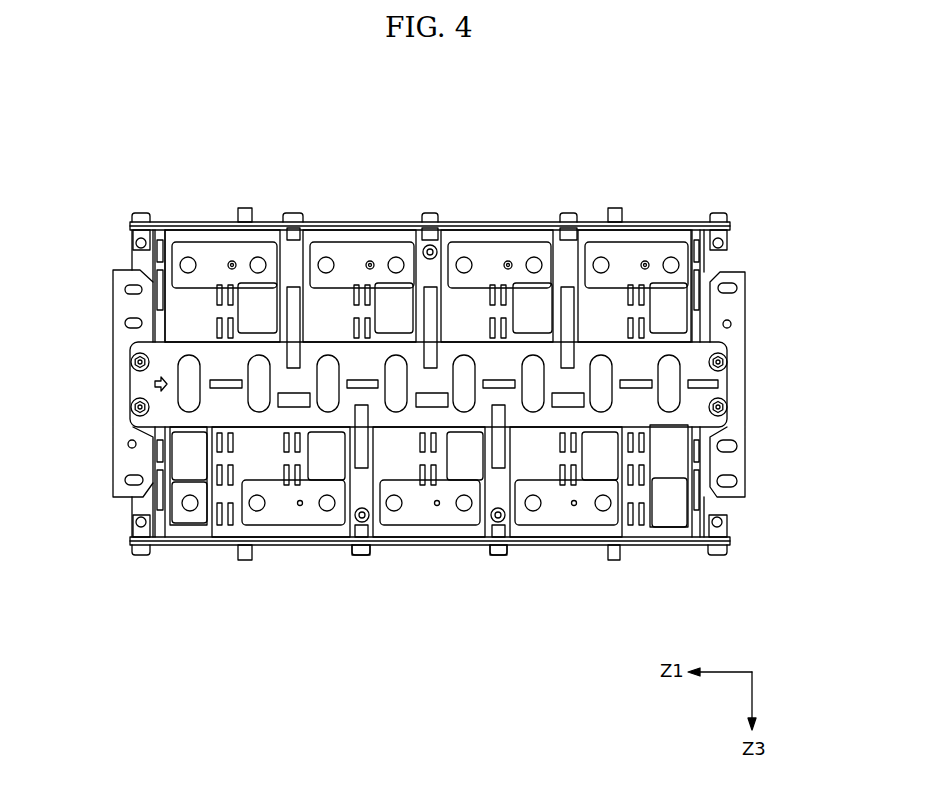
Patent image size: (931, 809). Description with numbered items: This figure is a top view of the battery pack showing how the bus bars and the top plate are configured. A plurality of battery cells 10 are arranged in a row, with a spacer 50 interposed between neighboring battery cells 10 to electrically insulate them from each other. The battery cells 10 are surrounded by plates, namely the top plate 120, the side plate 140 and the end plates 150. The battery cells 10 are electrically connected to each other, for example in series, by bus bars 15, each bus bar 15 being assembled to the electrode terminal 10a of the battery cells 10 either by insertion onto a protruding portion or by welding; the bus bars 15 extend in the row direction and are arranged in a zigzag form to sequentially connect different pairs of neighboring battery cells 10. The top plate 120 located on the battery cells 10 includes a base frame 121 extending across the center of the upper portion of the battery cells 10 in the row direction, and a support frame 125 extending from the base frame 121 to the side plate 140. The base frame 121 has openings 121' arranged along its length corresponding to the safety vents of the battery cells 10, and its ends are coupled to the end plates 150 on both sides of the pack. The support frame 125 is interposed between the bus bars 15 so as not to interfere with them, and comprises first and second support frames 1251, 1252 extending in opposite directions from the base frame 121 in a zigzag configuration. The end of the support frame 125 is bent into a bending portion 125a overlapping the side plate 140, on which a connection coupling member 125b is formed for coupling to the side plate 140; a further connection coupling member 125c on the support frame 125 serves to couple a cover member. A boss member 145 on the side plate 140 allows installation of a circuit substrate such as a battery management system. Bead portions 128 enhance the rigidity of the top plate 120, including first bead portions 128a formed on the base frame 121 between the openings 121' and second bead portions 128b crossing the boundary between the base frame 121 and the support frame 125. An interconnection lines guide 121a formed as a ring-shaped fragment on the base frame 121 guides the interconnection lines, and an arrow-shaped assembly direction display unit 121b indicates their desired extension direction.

The battery cell 10 is at (678, 465).
The electrode terminal 10a is at (602, 522).
The bus bar 15 is at (498, 253).
The spacer 50 is at (637, 530).
The top plate 120 is at (717, 336).
The base frame 121 is at (398, 384).
The opening 121' is at (658, 296).
The interconnection lines guide 121a is at (720, 383).
The assembly direction display unit 121b is at (161, 392).
The support frame 125 is at (560, 257).
The bending portion 125a is at (363, 522).
The connection coupling member 125b is at (495, 537).
The connection coupling member 125c is at (370, 518).
The first support frame 1251 is at (423, 272).
The second support frame 1252 is at (352, 492).
The bead portion 128 is at (330, 152).
The first bead portion 128a is at (281, 392).
The second bead portion 128b is at (297, 293).
The side plate 140 is at (188, 222).
The boss member 145 is at (614, 558).
The end plate 150 is at (742, 430).